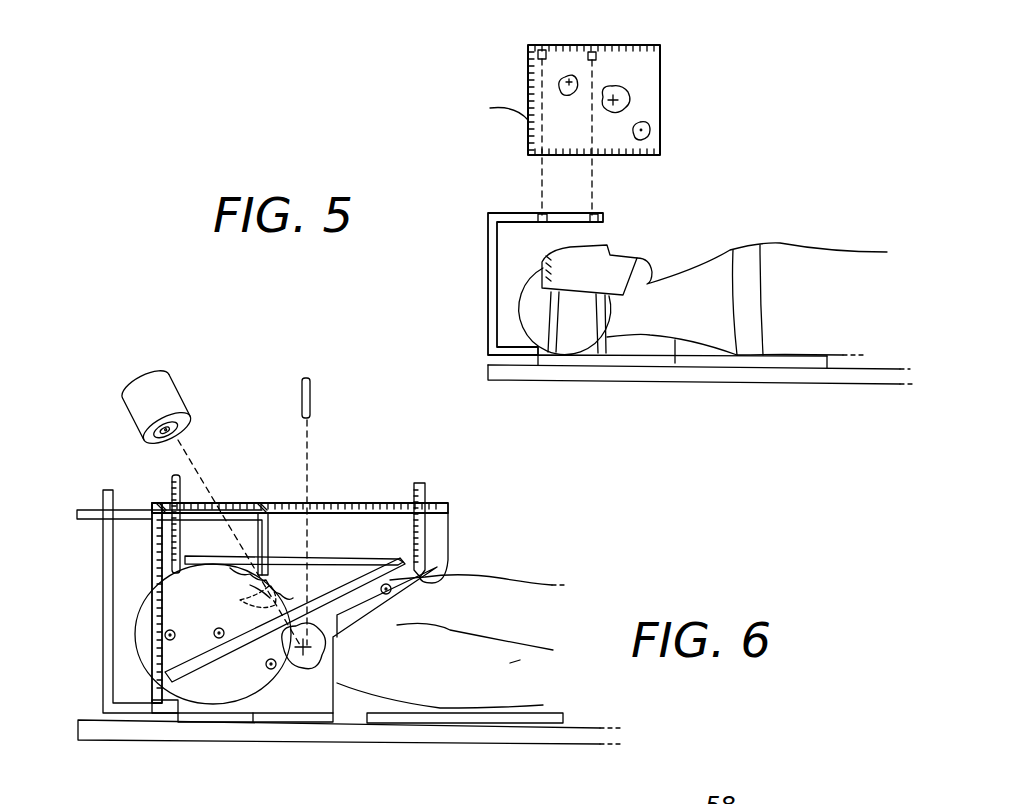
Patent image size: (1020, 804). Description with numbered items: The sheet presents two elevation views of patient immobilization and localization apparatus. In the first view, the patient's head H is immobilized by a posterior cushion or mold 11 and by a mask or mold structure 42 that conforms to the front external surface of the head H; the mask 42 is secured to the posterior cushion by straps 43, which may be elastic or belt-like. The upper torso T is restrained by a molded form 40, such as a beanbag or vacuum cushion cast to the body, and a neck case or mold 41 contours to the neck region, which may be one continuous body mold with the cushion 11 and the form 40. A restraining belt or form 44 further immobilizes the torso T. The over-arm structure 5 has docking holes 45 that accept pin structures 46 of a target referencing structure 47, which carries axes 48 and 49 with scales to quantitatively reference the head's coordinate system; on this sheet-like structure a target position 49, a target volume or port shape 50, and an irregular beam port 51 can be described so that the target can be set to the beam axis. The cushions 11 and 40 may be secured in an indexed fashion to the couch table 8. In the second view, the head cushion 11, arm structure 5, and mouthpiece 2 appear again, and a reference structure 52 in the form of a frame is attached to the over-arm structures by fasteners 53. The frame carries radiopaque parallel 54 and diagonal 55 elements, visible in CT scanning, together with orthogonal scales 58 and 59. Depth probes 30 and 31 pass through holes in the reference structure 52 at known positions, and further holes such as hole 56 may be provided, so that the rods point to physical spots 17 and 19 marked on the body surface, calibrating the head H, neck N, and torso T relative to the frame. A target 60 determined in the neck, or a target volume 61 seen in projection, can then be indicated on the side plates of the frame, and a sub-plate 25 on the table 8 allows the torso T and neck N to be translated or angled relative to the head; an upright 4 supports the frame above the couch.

In FIG. 6, the mouthpiece 2 is at (292, 560).
In FIG. 6, the upright post 4 is at (110, 493).
In FIG. 5, the over-arm structure 5 is at (488, 255).
In FIG. 6, the over-arm structure 5 is at (105, 605).
In FIG. 5, the couch table 8 is at (760, 385).
In FIG. 6, the couch table 8 is at (350, 744).
In FIG. 5, the posterior cushion or mold 11 is at (580, 365).
In FIG. 6, the posterior cushion or mold 11 is at (230, 722).
In FIG. 6, the physical spot 17 is at (152, 590).
In FIG. 6, the physical spot 19 is at (452, 578).
In FIG. 6, the sub-plate 25 is at (495, 723).
In FIG. 6, the depth probe 30 is at (180, 487).
In FIG. 6, the depth probe 31 is at (428, 500).
In FIG. 5, the molded form 40 is at (725, 372).
In FIG. 5, the neck case or mold 41 is at (665, 368).
In FIG. 5, the mask or mold structure 42 is at (620, 258).
In FIG. 5, the straps 43 is at (555, 345).
In FIG. 5, the restraining belt or form 44 is at (750, 253).
In FIG. 5, the docking holes 45 is at (540, 213).
In FIG. 5, the pin structures 46 is at (542, 50).
In FIG. 5, the target referencing structure 47 is at (650, 118).
In FIG. 5, the axis 48 is at (632, 45).
In FIG. 5, the axis / target position 49 is at (678, 98).
In FIG. 5, the target volume or port shape 50 is at (625, 95).
In FIG. 5, the beam port 51 is at (560, 88).
In FIG. 6, the reference structure 52 is at (385, 505).
In FIG. 6, the fasteners 53 is at (162, 485).
In FIG. 6, the parallel elements 54 is at (345, 556).
In FIG. 6, the diagonal elements 55 is at (380, 560).
In FIG. 6, the hole 56 is at (166, 638).
In FIG. 6, the orthogonal scale 58 is at (350, 503).
In FIG. 6, the orthogonal scale 59 is at (150, 627).
In FIG. 6, the target 60 is at (305, 668).
In FIG. 6, the target volume 61 is at (340, 658).
In FIG. 5, the head H is at (525, 326).
In FIG. 6, the head H is at (200, 704).
In FIG. 6, the neck N is at (280, 680).
In FIG. 5, the torso T is at (810, 255).
In FIG. 6, the torso T is at (513, 585).